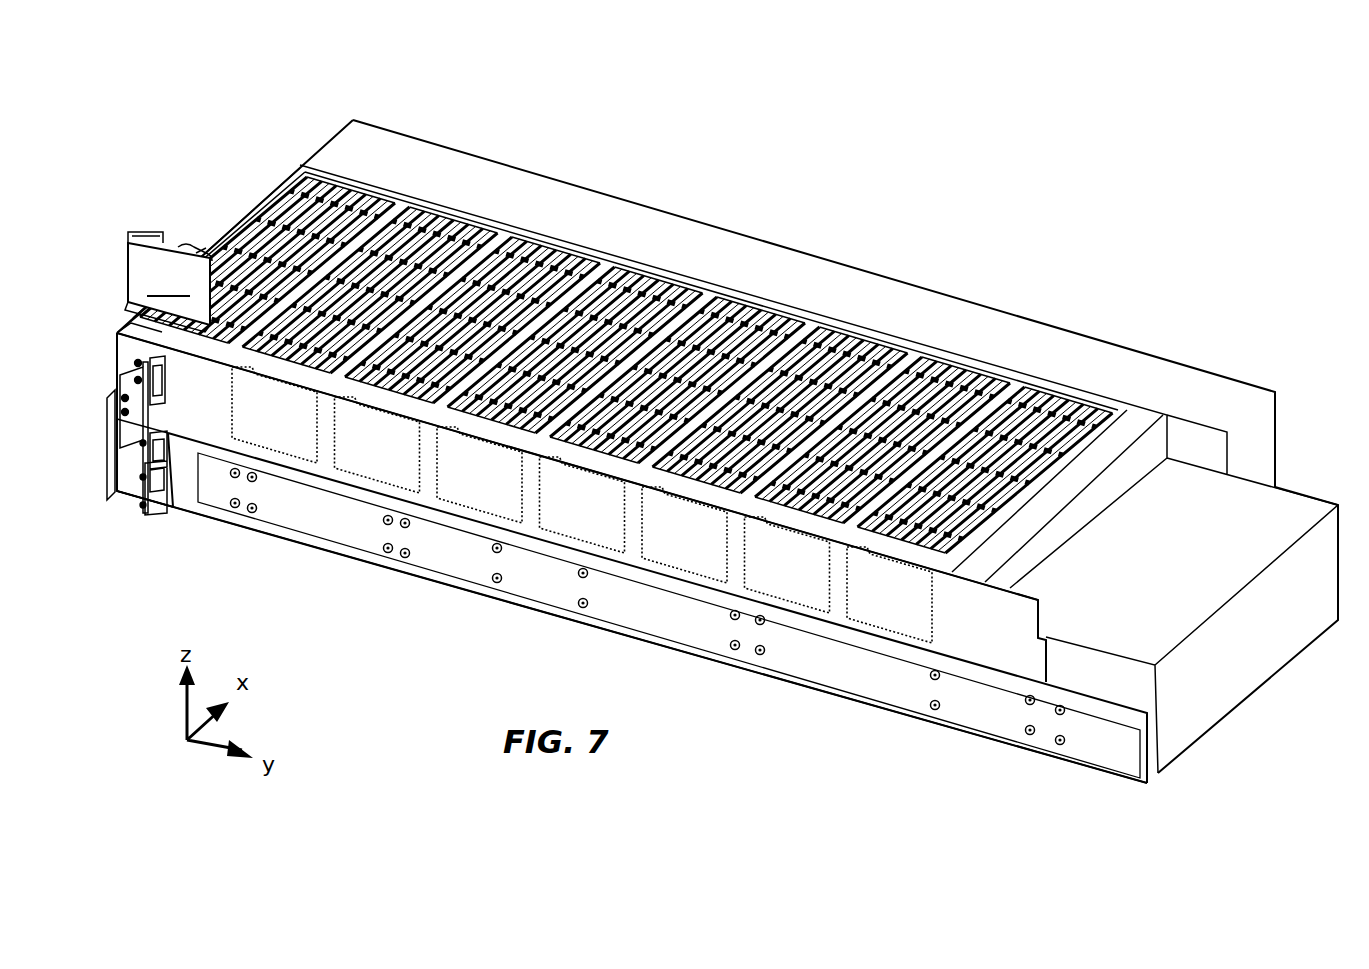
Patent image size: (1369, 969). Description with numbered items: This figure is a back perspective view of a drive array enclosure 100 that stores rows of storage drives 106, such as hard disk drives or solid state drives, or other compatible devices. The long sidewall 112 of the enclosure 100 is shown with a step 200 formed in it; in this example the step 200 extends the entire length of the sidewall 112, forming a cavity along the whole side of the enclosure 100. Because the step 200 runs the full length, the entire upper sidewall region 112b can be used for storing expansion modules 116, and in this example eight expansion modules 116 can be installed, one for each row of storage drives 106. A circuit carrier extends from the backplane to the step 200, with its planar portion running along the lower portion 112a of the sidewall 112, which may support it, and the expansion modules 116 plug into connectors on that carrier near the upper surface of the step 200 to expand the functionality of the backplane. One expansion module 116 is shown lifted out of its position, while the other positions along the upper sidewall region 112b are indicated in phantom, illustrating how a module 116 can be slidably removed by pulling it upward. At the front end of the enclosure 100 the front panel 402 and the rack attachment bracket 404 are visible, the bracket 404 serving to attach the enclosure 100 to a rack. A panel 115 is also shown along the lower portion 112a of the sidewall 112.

The drive array enclosure 100 is at (734, 190).
The front panel 402 is at (628, 346).
The storage drives 106 is at (368, 202).
The expansion module 116 is at (912, 611).
The sidewall 112 is at (992, 638).
The lower portion of the sidewall 112a is at (260, 523).
The upper sidewall region 112b is at (125, 352).
The front panel 115 is at (352, 533).
The step 200 is at (186, 483).
The rack attachment bracket 404 is at (123, 502).